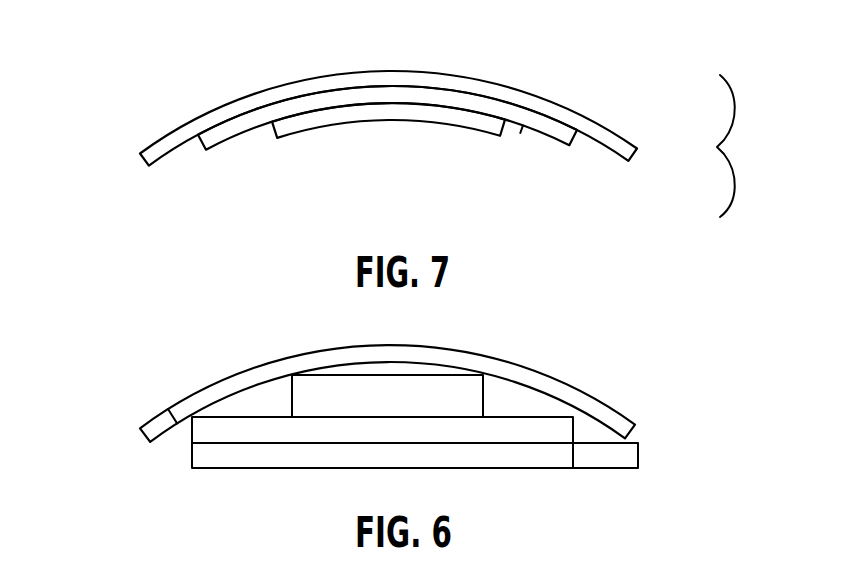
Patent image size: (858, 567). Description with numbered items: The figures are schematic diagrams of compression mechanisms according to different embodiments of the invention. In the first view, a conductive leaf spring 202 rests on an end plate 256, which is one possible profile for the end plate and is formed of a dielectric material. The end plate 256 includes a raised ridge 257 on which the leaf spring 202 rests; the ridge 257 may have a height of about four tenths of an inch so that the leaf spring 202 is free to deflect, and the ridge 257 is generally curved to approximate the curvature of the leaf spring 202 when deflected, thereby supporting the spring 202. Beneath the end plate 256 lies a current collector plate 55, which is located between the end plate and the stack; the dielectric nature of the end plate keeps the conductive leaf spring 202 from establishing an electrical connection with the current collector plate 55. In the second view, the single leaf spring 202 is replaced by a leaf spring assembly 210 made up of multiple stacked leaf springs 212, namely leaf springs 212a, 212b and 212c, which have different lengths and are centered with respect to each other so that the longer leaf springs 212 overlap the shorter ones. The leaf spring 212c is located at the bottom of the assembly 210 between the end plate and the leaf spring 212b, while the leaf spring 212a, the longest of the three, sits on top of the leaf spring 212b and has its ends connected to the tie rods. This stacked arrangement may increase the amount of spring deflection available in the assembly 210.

In FIG. 7, the leaf spring assembly 210 is at (720, 147).
In FIG. 7, the leaf springs 212 is at (483, 88).
In FIG. 7, the leaf spring 212a is at (558, 108).
In FIG. 7, the leaf spring 212b is at (530, 132).
In FIG. 7, the leaf spring 212c is at (373, 111).
In FIG. 6, the leaf spring 202 is at (590, 405).
In FIG. 6, the end plate 256 is at (573, 437).
In FIG. 6, the raised ridge 257 is at (317, 390).
In FIG. 6, the current collector plate 55 is at (630, 457).